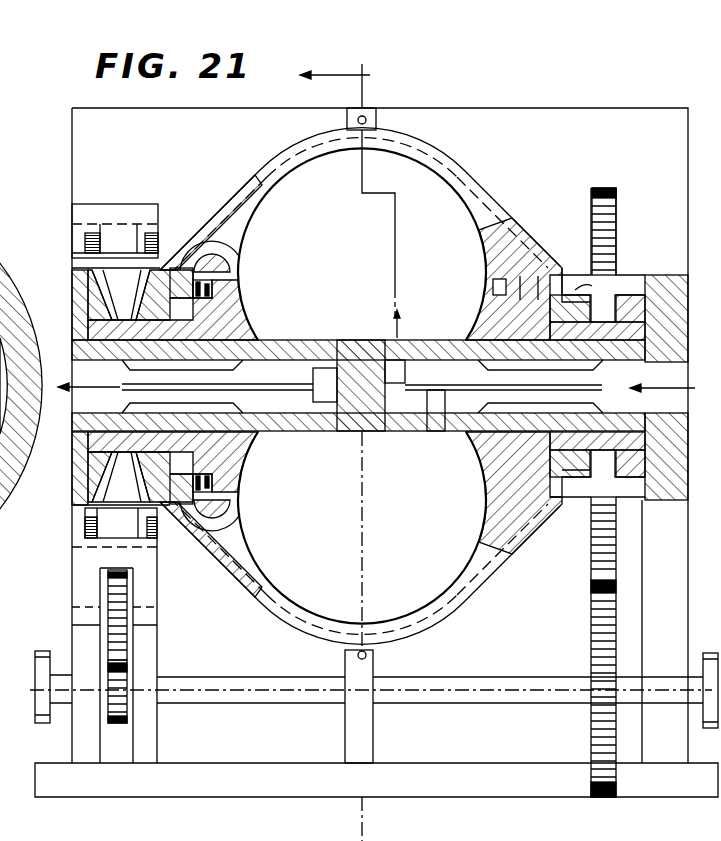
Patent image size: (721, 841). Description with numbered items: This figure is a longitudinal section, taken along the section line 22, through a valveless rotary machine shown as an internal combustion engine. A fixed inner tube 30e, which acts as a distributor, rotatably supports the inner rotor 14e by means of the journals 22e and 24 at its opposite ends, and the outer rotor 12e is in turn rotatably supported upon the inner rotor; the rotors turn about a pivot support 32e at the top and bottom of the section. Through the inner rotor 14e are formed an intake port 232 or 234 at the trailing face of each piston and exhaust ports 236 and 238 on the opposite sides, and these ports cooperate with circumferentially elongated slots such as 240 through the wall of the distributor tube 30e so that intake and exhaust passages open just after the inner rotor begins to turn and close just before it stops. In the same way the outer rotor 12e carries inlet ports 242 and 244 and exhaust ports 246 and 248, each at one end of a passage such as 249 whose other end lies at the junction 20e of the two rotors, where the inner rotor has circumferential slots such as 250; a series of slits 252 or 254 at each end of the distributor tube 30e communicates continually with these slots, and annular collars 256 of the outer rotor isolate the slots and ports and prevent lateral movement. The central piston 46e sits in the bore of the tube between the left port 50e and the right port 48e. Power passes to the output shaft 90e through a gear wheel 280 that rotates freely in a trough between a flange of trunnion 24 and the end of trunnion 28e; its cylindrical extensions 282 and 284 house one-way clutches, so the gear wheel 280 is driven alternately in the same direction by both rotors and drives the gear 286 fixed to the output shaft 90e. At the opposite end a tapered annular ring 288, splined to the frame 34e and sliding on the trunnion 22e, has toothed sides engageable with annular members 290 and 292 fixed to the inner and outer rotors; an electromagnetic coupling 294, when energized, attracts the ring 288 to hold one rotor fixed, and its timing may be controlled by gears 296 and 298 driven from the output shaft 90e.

The section line 22 is at (320, 442).
The pivot support 32e is at (340, 118).
The outer rotor 12e is at (453, 172).
The passage in the outer rotor 249 is at (180, 240).
The exhaust port 246 is at (237, 243).
The exhaust port 236 is at (320, 330).
The annular member 290 is at (120, 276).
The inner rotor 14e is at (260, 290).
The junction of the inner and outer rotors 20e is at (232, 272).
The tapered annular ring 288 is at (85, 240).
The journal 22e is at (105, 325).
The inlet port 242 is at (492, 262).
The annular collar 256 is at (494, 284).
The trunnion 28e is at (572, 300).
The cylindrical extension 284 is at (630, 290).
The cylindrical extension 282 is at (583, 285).
The gear wheel 280 is at (617, 205).
The journal 24 is at (625, 325).
The fixed inner tube 30e is at (672, 340).
The piston 46e is at (375, 435).
The intake port 232 is at (390, 335).
The circumferentially elongated slot 240 is at (400, 335).
The intake port 234 is at (430, 440).
The circumferential series of slits 254 is at (195, 370).
The circumferential series of slits 252 is at (545, 355).
The left port 50e is at (112, 383).
The right port 48e is at (680, 384).
The exhaust port 238 is at (280, 452).
The annular member 292 is at (150, 470).
The exhaust port 248 is at (232, 525).
The circumferential slot 250 is at (235, 505).
The electromagnetic coupling 294 is at (108, 530).
The frame 34e is at (80, 578).
The gear 296 is at (110, 605).
The gear 298 is at (125, 715).
The inlet port 244 is at (465, 535).
The gear 286 is at (595, 630).
The output shaft 90e is at (456, 690).